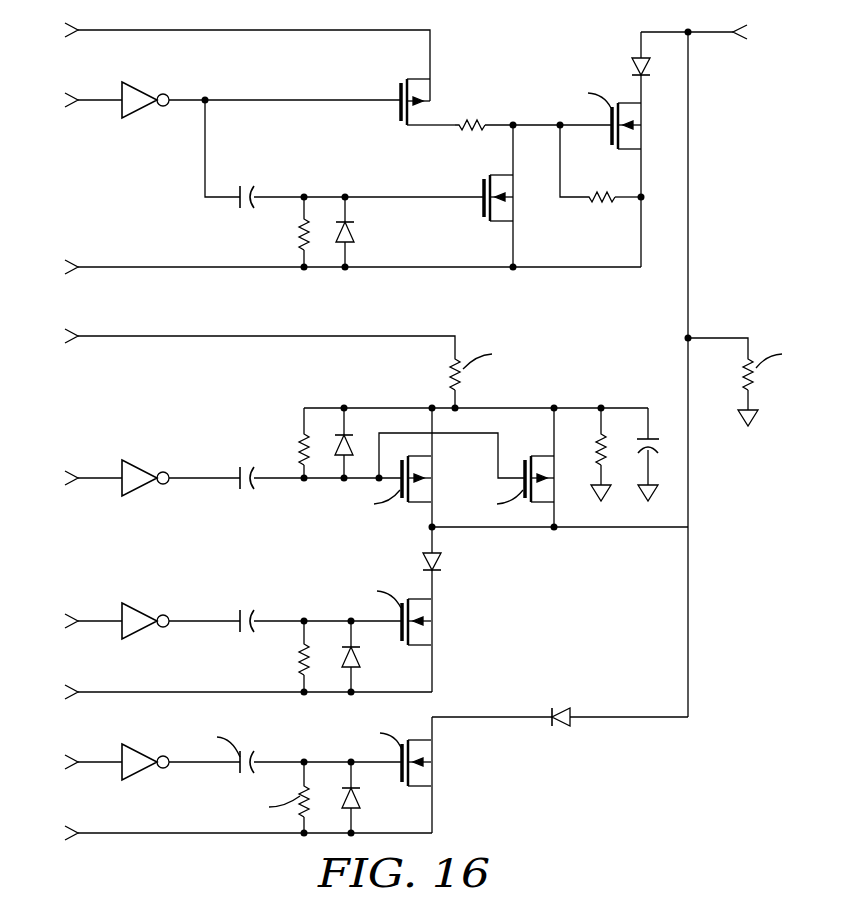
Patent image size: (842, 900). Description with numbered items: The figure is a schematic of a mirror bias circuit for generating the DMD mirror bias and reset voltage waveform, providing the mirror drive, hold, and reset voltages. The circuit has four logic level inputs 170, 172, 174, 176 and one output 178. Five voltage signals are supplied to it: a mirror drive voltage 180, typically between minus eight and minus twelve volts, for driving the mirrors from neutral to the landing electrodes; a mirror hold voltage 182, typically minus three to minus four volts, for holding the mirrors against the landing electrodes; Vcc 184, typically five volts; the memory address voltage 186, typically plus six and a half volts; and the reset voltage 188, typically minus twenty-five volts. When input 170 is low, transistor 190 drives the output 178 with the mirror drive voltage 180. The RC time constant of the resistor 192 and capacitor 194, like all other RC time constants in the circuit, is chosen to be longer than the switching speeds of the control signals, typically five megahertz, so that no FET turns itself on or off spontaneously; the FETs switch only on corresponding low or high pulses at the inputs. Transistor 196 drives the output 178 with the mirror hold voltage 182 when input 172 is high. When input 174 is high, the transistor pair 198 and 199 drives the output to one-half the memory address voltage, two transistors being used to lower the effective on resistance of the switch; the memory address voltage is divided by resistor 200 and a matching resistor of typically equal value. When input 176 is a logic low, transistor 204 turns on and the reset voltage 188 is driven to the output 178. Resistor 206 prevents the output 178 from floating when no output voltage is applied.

The logic level input 170 is at (212, 762).
The logic level input 172 is at (211, 100).
The logic level input 174 is at (212, 478).
The logic level input 176 is at (212, 621).
The output 178 is at (716, 368).
The mirror drive voltage 180 is at (227, 834).
The mirror hold voltage 182 is at (331, 268).
The Vcc 184 is at (226, 59).
The memory address voltage 186 is at (238, 339).
The reset voltage 188 is at (227, 693).
The transistor 190 is at (384, 752).
The resistor 192 is at (268, 797).
The capacitor 194 is at (214, 747).
The transistor 196 is at (593, 114).
The transistor 198 is at (381, 487).
The transistor 199 is at (504, 487).
The resistor 200 is at (490, 374).
The transistor 204 is at (383, 611).
The resistor 206 is at (753, 381).